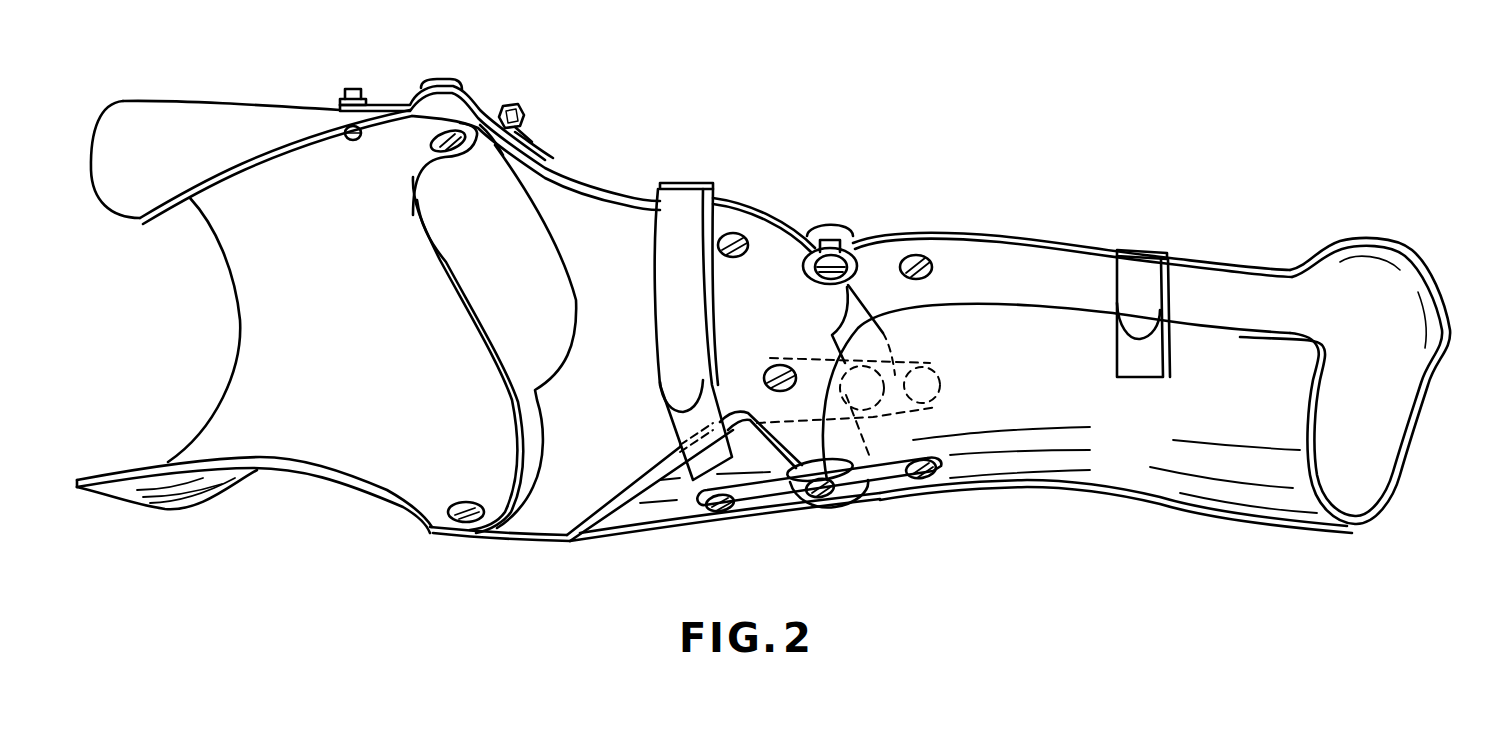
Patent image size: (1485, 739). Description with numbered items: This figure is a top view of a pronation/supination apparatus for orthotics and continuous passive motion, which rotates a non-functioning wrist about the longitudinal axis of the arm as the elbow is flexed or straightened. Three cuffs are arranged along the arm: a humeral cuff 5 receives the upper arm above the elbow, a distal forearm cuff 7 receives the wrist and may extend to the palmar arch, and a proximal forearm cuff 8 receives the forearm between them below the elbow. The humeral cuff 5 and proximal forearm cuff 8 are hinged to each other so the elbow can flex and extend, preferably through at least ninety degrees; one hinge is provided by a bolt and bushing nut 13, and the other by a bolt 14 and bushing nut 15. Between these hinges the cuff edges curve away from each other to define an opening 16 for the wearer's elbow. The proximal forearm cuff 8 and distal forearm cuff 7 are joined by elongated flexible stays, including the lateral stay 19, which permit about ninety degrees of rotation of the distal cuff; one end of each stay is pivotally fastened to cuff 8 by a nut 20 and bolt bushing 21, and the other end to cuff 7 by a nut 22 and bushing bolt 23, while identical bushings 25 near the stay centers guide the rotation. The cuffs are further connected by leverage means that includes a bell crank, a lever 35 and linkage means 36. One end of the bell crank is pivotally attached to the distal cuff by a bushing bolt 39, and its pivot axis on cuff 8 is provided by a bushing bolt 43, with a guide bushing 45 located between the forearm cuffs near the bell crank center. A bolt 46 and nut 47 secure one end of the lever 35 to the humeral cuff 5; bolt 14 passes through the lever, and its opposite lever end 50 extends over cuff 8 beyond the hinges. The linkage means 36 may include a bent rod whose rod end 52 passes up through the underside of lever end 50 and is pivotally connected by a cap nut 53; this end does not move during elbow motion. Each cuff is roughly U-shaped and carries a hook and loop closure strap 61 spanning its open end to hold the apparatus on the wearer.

The humeral cuff 5 is at (310, 470).
The distal forearm cuff 7 is at (1097, 492).
The proximal forearm cuff 8 is at (770, 212).
The bushing nut 13 is at (469, 504).
The bolt 14 is at (447, 82).
The bushing nut 15 is at (427, 146).
The opening 16 is at (488, 273).
The lateral stay 19 is at (770, 500).
The nut 20 is at (716, 508).
The bolt bushing 21 is at (738, 257).
The nut 22 is at (936, 478).
The bushing bolt 23 is at (917, 262).
The bushings 25 is at (798, 456).
The lever 35 is at (390, 104).
The linkage means 36 is at (508, 160).
The bushing bolt 39 is at (945, 397).
The bushing bolt 43 is at (776, 366).
The guide bushing 45 is at (885, 352).
The bolt 46 is at (352, 141).
The nut 47 is at (342, 100).
The lever end 50 is at (528, 141).
The rod end 52 is at (524, 127).
The cap nut 53 is at (517, 106).
The hook and loop closure strap 61 is at (668, 327).